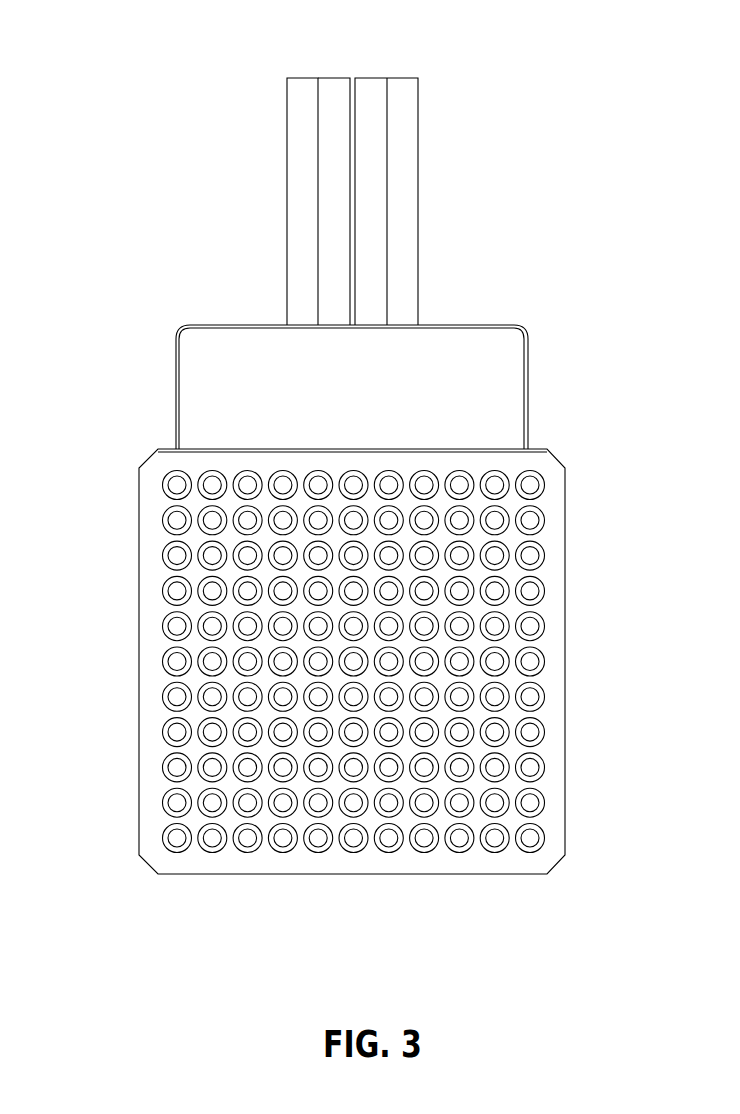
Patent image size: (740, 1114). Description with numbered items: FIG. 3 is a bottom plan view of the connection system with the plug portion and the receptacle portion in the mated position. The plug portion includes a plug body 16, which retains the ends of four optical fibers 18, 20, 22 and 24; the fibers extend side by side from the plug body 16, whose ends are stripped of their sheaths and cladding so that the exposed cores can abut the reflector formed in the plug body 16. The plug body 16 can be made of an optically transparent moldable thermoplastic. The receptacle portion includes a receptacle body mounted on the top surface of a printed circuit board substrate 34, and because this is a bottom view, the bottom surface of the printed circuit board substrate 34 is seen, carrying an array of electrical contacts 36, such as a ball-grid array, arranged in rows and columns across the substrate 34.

The plug body 16 is at (176, 368).
The optical fiber 18 is at (288, 158).
The optical fiber 20 is at (330, 77).
The optical fiber 22 is at (367, 77).
The optical fiber 24 is at (418, 158).
The printed circuit board substrate 34 is at (139, 650).
The electrical contacts 36 is at (162, 485).